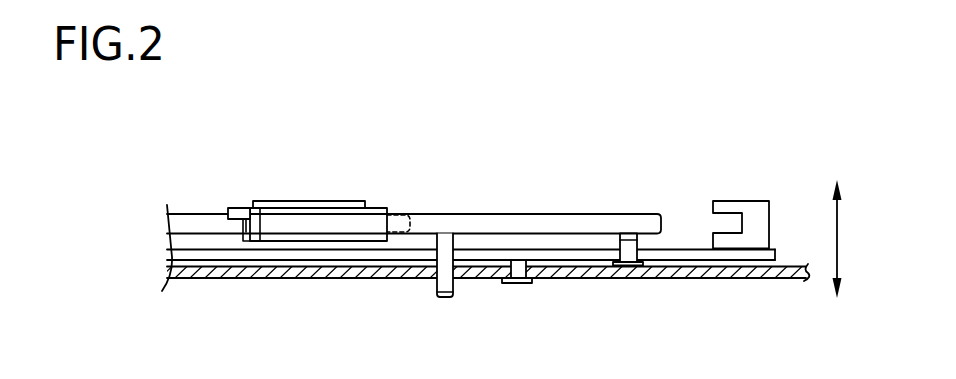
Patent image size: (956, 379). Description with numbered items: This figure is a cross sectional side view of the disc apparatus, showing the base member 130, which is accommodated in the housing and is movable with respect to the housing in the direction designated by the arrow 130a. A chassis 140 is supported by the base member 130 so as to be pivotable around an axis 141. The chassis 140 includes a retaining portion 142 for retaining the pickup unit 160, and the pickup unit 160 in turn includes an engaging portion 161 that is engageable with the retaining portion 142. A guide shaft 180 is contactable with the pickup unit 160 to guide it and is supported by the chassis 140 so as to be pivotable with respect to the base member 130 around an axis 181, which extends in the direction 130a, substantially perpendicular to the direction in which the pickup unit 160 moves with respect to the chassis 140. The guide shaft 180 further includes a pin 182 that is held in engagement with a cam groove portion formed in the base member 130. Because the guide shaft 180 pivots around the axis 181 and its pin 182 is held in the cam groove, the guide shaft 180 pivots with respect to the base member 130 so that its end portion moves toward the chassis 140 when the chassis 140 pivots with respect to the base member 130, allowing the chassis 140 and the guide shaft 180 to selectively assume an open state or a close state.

The base member 130 is at (322, 278).
The arrow indicating moving direction of base member 130a is at (827, 237).
The chassis 140 is at (690, 236).
The axis 141 is at (525, 284).
The retaining portion 142 is at (735, 200).
The pickup unit 160 is at (254, 198).
The engaging portion 161 is at (406, 212).
The guide shaft 180 is at (552, 209).
The axis 181 is at (636, 240).
The pin 182 is at (452, 285).